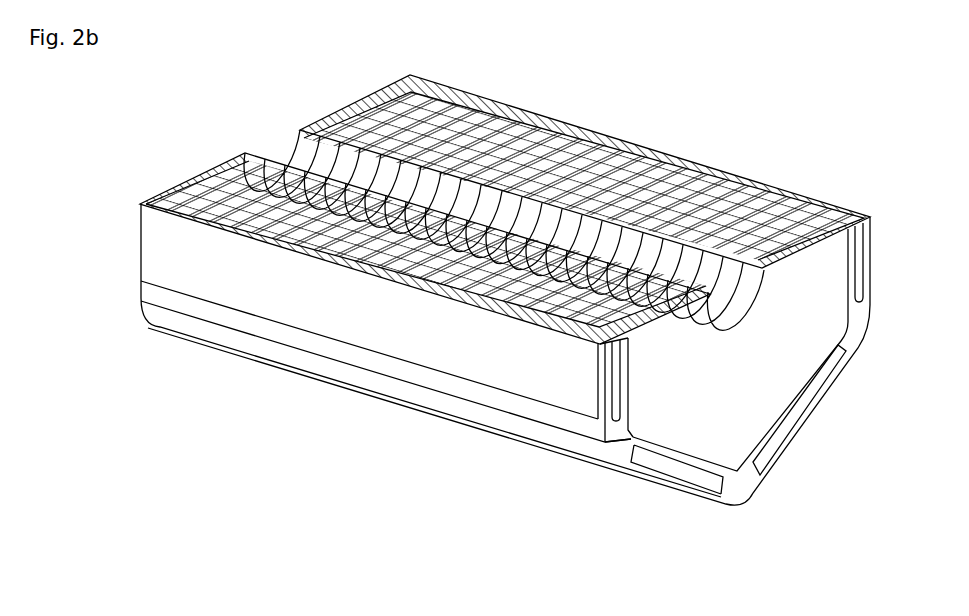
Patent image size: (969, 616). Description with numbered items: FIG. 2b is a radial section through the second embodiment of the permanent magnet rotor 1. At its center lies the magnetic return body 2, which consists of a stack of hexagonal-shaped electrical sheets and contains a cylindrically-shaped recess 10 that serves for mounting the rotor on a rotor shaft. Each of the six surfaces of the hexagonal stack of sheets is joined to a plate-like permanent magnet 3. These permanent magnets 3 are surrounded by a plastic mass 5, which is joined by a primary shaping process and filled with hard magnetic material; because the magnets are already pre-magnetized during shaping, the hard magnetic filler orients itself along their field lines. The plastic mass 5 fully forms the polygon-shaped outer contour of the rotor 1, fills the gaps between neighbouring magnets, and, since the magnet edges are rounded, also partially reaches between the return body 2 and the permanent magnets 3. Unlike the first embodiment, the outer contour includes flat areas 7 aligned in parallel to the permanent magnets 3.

The permanent magnet rotor 1 is at (830, 147).
The return body 2 is at (704, 426).
The permanent magnets 3 is at (728, 187).
The plastic mass 5 is at (628, 442).
The flat areas 7 is at (291, 306).
The cylindrically-shaped recess 10 is at (313, 170).